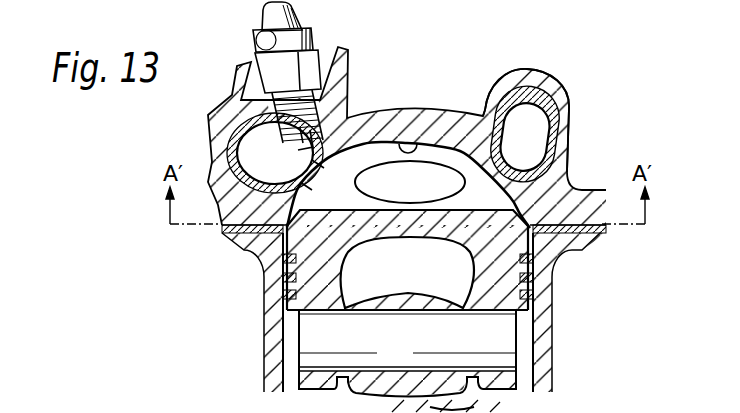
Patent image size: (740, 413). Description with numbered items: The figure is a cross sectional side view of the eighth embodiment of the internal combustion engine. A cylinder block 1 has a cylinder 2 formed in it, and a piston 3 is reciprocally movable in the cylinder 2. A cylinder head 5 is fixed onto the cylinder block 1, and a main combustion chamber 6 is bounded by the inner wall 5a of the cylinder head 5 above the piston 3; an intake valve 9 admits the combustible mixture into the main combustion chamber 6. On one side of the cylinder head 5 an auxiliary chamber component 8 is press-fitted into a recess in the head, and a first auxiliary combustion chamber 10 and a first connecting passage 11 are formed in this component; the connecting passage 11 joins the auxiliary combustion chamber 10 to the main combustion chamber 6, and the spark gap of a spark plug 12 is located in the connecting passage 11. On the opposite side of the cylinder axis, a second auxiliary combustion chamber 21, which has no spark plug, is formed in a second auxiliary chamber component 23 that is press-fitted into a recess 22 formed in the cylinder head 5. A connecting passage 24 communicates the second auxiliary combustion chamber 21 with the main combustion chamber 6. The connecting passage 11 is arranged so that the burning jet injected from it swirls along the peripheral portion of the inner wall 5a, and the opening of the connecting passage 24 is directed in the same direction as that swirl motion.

The cylinder block 1 is at (543, 327).
The cylinder 2 is at (522, 361).
The piston 3 is at (537, 292).
The cylinder head 5 is at (574, 186).
The inner wall of the cylinder head 5a is at (416, 140).
The main combustion chamber 6 is at (484, 202).
The auxiliary chamber component 8 is at (222, 122).
The intake valve 9 is at (380, 190).
The first auxiliary combustion chamber 10 is at (283, 161).
The first connecting passage 11 is at (323, 163).
The spark plug 12 is at (266, 25).
The second auxiliary combustion chamber 21 is at (528, 146).
The recess 22 is at (560, 131).
The second auxiliary chamber component 23 is at (553, 110).
The connecting passage 24 is at (483, 113).